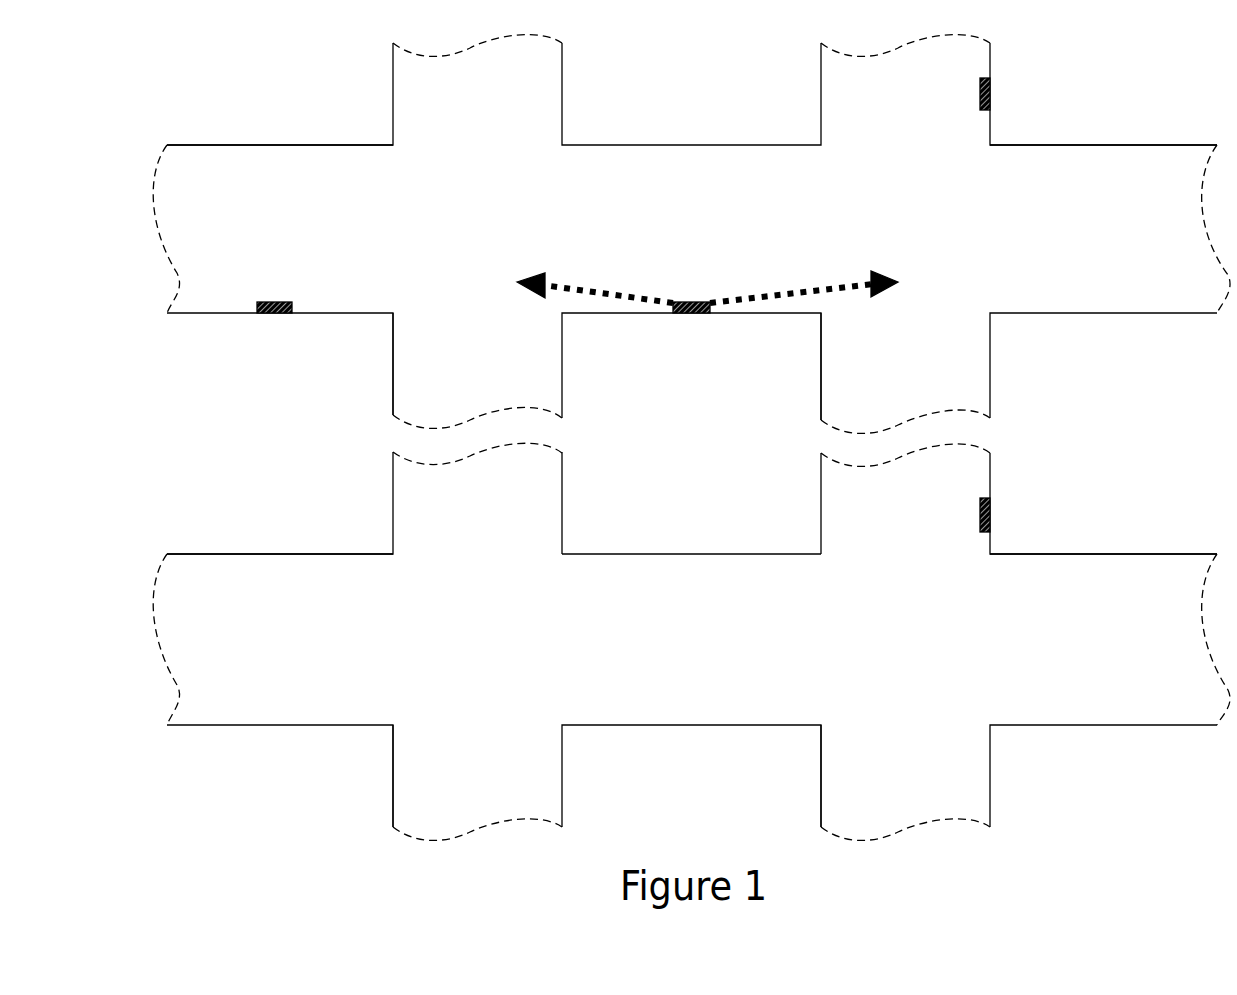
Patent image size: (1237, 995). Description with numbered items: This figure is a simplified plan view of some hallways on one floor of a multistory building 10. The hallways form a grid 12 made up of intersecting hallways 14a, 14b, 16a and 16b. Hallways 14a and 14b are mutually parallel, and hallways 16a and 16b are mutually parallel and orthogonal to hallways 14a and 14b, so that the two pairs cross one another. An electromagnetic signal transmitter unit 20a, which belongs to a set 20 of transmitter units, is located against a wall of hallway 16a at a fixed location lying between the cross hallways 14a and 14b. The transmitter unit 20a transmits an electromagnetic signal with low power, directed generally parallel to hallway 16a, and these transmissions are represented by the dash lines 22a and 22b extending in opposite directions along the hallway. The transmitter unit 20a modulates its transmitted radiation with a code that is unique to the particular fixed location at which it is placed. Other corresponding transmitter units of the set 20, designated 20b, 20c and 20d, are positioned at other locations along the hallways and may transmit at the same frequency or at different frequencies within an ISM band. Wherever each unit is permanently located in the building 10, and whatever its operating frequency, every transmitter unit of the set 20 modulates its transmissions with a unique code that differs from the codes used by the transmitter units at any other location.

The multistory building 10 is at (702, 816).
The grid 12 is at (702, 404).
The hallway 14a is at (393, 372).
The hallway 14b is at (821, 375).
The hallway 16a is at (277, 145).
The hallway 16b is at (278, 554).
The set of transmitter units 20 is at (638, 293).
The electromagnetic signal transmitter unit 20a is at (690, 314).
The transmitter unit 20b is at (275, 313).
The transmitter unit 20c is at (992, 500).
The transmitter unit 20d is at (992, 80).
The dash line 22a is at (597, 282).
The dash line 22b is at (820, 282).